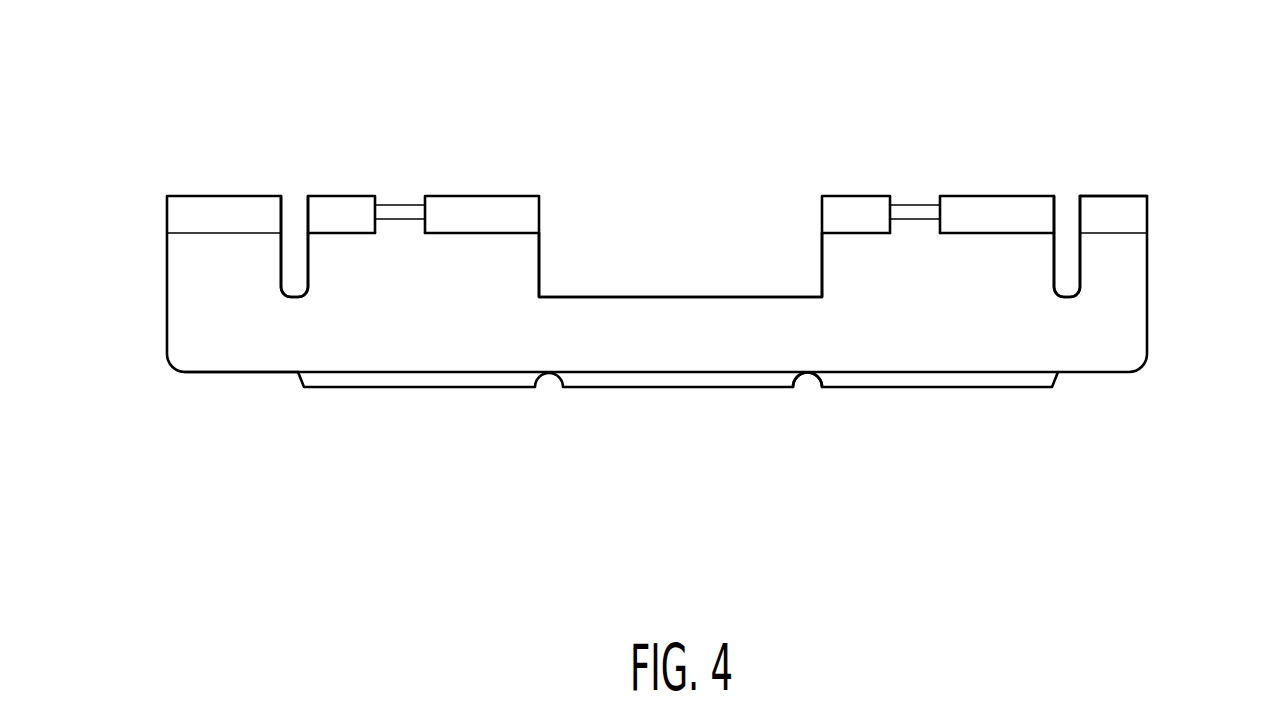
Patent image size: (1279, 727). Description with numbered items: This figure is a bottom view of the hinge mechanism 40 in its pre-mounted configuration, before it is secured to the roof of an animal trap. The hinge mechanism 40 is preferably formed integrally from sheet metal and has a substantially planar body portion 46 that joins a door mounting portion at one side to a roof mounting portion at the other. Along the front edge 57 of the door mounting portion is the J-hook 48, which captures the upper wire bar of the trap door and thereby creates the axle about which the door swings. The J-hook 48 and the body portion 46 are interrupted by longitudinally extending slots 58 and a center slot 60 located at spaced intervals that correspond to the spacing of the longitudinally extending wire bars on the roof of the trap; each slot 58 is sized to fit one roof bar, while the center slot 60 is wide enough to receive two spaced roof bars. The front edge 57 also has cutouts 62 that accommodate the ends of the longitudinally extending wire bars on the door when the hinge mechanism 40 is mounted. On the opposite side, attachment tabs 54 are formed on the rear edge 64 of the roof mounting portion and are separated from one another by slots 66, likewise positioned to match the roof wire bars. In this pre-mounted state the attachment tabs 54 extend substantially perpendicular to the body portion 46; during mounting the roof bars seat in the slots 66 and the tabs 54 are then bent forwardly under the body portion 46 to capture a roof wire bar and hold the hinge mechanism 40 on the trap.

The hinge mechanism 40 is at (152, 103).
The body portion 46 is at (1147, 323).
The J-hook 48 is at (833, 216).
The attachment tabs 54 is at (1017, 387).
The front edge 57 is at (1118, 196).
The slots 58 is at (306, 260).
The center slot 60 is at (540, 262).
The cutouts 62 is at (940, 213).
The rear edge 64 is at (250, 372).
The slots 66 is at (808, 372).